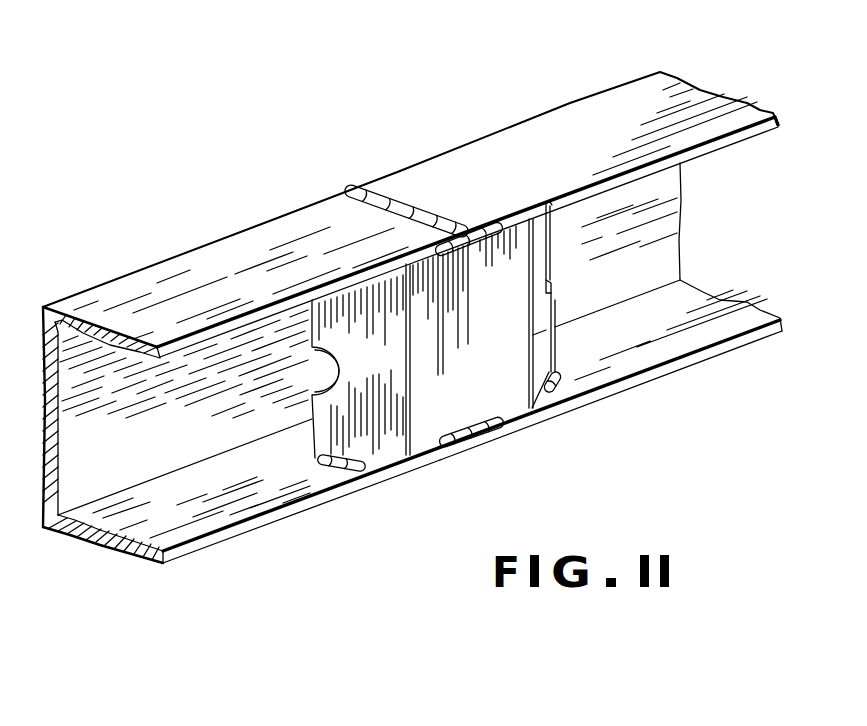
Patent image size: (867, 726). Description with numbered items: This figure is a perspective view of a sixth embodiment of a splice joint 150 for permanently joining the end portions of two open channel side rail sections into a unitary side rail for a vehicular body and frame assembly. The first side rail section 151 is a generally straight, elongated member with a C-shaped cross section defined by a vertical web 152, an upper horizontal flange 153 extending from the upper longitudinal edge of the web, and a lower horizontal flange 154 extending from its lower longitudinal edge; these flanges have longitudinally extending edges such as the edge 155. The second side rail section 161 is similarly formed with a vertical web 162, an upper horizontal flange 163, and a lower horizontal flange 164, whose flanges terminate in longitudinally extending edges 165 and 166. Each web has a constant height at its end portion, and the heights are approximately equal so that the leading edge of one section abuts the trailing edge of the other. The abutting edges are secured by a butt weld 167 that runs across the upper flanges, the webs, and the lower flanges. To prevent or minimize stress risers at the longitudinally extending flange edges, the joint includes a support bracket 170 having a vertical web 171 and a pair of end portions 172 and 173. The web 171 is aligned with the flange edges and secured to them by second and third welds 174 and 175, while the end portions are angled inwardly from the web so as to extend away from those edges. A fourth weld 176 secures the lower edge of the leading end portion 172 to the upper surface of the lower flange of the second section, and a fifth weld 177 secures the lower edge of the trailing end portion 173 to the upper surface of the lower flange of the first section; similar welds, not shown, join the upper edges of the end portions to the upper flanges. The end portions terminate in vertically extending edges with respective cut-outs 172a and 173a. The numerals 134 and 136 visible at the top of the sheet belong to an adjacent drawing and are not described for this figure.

The reference from adjacent figure 134 is at (112, 0).
The reference from adjacent figure 136 is at (207, 0).
The splice joint 150 is at (168, 171).
The first side rail section 151 is at (582, 90).
The vertical web 152 is at (667, 200).
The upper horizontal flange 153 is at (707, 107).
The lower horizontal flange 154 is at (707, 317).
The longitudinally extending edge 155 is at (727, 140).
The second side rail section 161 is at (138, 244).
The vertical web 162 is at (85, 473).
The upper horizontal flange 163 is at (167, 303).
The lower horizontal flange 164 is at (193, 345).
The longitudinally extending edge 165 is at (133, 543).
The longitudinally extending edge 166 is at (192, 547).
The butt weld 167 is at (398, 210).
The support bracket 170 is at (520, 446).
The vertical web 171 is at (486, 368).
The leading end portion 172 is at (360, 327).
The cut-out 172a is at (313, 372).
The trailing end portion 173 is at (543, 233).
The cut-out 173a is at (547, 278).
The second weld 174 is at (491, 232).
The third weld 175 is at (456, 450).
The fourth weld 176 is at (335, 472).
The fifth weld 177 is at (552, 388).